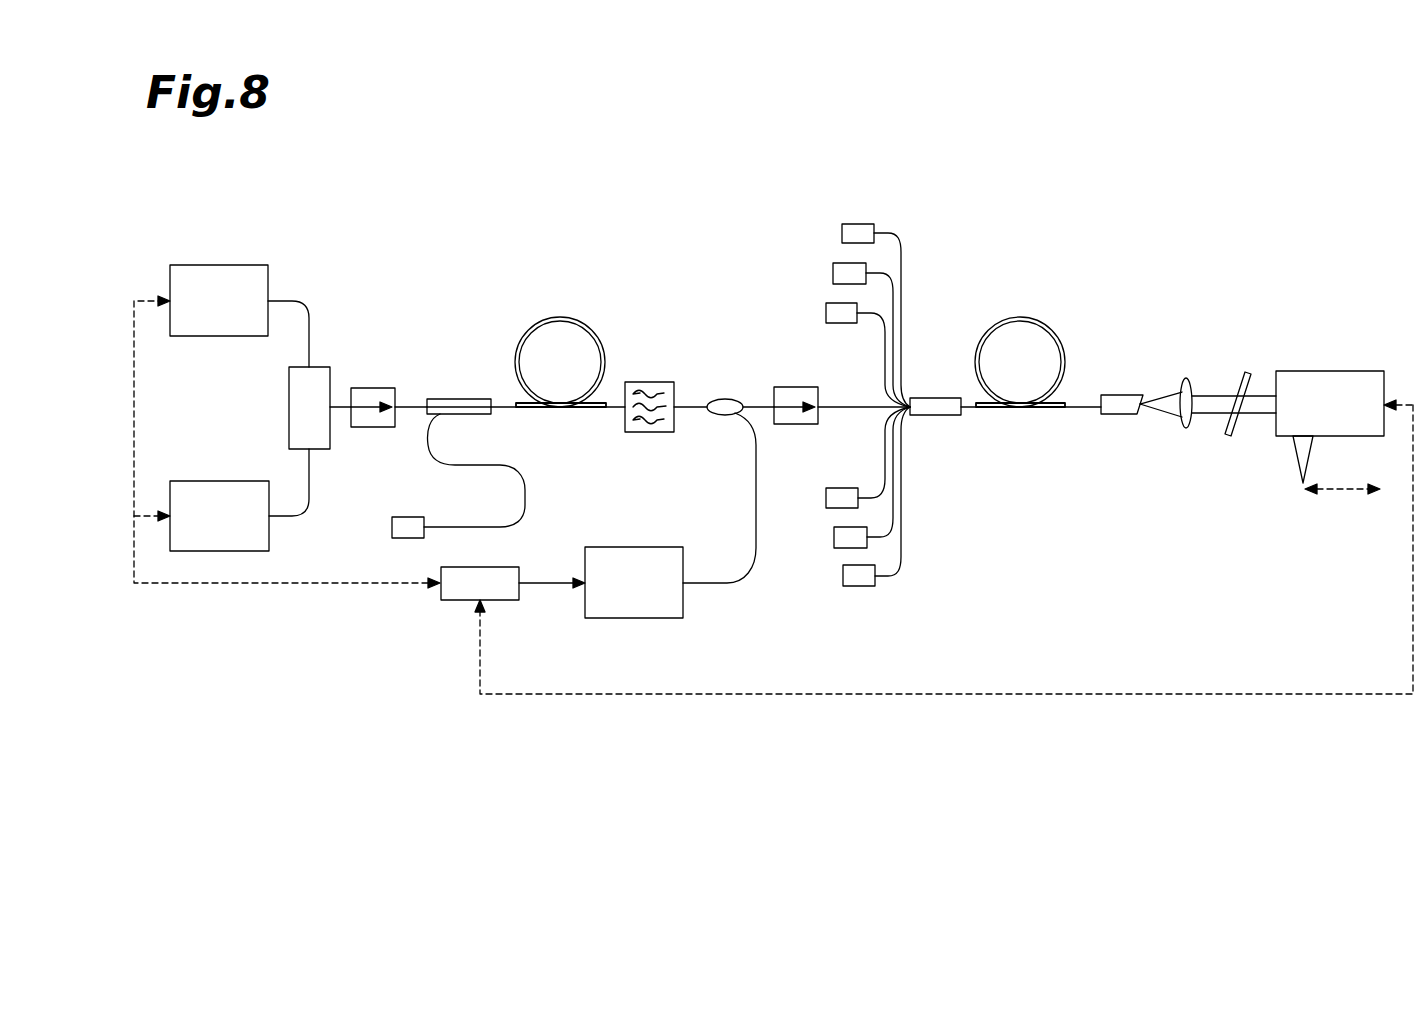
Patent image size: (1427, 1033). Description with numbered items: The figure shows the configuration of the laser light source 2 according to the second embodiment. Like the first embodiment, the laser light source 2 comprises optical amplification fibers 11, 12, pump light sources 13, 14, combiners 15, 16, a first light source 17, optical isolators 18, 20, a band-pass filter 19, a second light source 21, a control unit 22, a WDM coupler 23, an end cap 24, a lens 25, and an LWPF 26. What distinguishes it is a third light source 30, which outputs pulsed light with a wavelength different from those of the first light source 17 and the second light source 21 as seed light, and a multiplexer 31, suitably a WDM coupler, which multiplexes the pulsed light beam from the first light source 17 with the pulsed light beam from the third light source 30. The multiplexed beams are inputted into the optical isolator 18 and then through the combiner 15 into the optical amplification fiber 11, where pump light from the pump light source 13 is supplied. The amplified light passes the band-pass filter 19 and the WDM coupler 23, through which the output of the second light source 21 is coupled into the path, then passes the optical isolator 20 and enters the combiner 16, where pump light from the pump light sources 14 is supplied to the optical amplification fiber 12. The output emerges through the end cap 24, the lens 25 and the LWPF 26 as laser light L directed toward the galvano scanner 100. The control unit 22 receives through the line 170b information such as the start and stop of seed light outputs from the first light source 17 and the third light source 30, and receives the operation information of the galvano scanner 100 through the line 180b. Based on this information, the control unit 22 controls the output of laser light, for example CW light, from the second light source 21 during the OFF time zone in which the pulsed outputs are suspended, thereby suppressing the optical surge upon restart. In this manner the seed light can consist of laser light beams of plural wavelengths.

The laser light source 2 is at (1172, 215).
The optical amplification fiber 11 is at (561, 318).
The optical amplification fiber 12 is at (1022, 318).
The pump light source 13 is at (392, 526).
The pump light source 14 is at (826, 308).
The combiner 15 is at (461, 399).
The combiner 16 is at (935, 398).
The first light source 17 is at (198, 265).
The optical isolator 18 is at (374, 388).
The band-pass filter 19 is at (651, 382).
The optical isolator 20 is at (794, 387).
The second light source 21 is at (634, 618).
The control unit 22 is at (507, 600).
The WDM coupler 23 is at (726, 399).
The end cap 24 is at (1122, 395).
The lens 25 is at (1189, 378).
The LWPF 26 is at (1250, 374).
The third light source 30 is at (200, 481).
The multiplexer 31 is at (289, 403).
The galvano scanner 100 is at (1342, 371).
The line 170b is at (245, 583).
The line 180b is at (720, 694).
The laser light L is at (1295, 463).